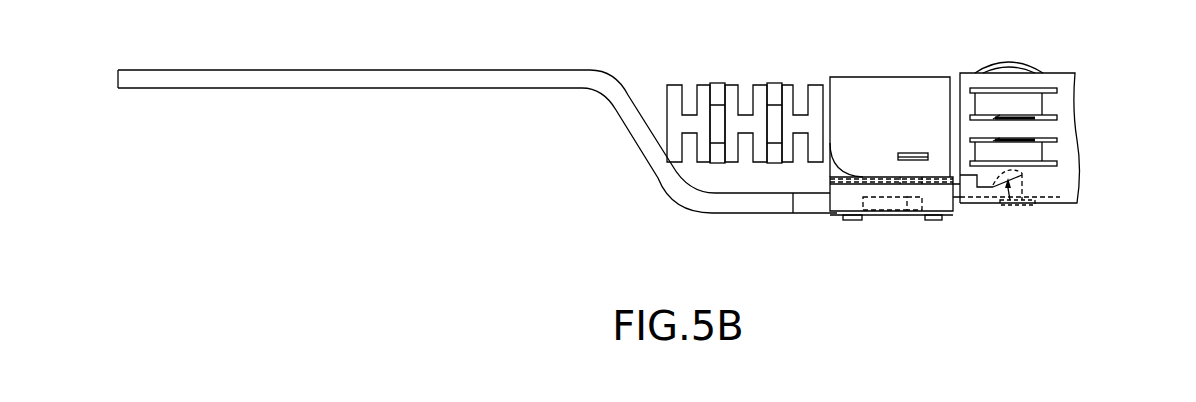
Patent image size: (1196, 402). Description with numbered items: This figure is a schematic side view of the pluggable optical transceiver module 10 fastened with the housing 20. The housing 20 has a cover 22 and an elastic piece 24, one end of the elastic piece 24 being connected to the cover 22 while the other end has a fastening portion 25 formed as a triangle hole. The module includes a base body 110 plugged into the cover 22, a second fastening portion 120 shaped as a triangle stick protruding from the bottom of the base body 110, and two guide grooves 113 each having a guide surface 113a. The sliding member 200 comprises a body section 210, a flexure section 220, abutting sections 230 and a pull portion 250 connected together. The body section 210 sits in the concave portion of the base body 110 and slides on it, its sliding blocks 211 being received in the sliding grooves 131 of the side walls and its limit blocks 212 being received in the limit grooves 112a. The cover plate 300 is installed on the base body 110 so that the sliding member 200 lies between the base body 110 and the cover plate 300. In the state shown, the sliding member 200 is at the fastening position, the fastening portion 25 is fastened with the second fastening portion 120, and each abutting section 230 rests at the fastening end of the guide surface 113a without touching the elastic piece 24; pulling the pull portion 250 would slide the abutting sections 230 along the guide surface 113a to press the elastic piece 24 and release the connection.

The sliding member 200 is at (138, 46).
The pull portion 250 is at (398, 80).
The pluggable optical transceiver module 10 is at (620, 204).
The base body 110 is at (866, 100).
The limit block 212 is at (912, 165).
The flexure section 220 is at (953, 178).
The body section 210 is at (940, 190).
The cover plate 300 is at (837, 217).
The sliding groove 131 is at (873, 212).
The sliding block 211 is at (918, 210).
The limit groove 112a is at (898, 187).
The housing 20 is at (1067, 55).
The cover 22 is at (1073, 83).
The elastic piece 24 is at (972, 203).
The second fastening portion 120 is at (995, 200).
The guide surface 113a is at (1012, 203).
The fastening portion 25 is at (1023, 203).
The abutting section 230 is at (1035, 205).
The guide groove 113 is at (1032, 183).